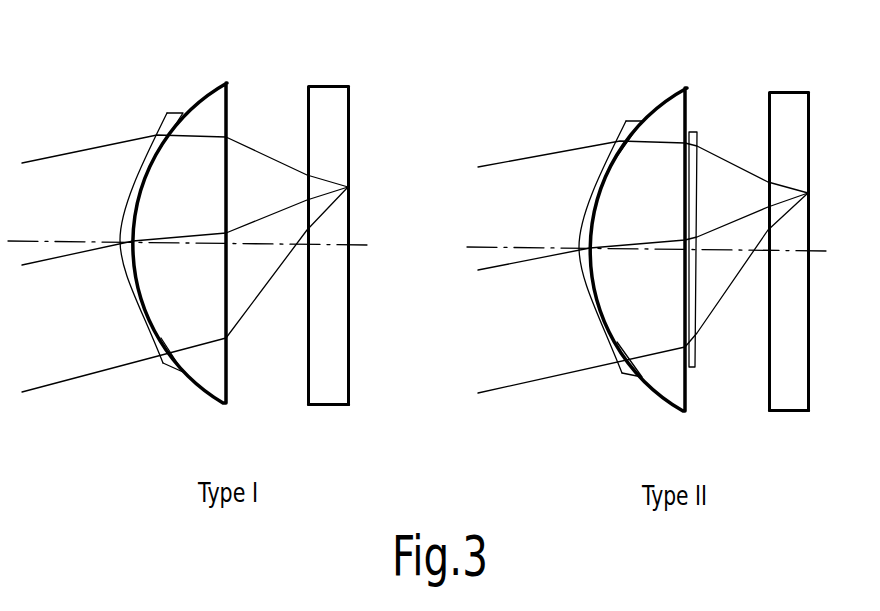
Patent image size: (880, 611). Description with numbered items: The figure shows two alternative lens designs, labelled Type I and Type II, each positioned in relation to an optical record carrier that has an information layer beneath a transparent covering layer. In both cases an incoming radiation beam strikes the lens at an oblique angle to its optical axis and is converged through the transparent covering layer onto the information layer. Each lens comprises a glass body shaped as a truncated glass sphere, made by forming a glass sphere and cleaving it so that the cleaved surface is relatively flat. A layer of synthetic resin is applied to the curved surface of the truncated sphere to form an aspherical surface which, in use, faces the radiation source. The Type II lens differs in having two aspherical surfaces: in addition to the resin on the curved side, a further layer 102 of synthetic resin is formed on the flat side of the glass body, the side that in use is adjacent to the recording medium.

The further layer of synthetic resin 102 is at (688, 370).